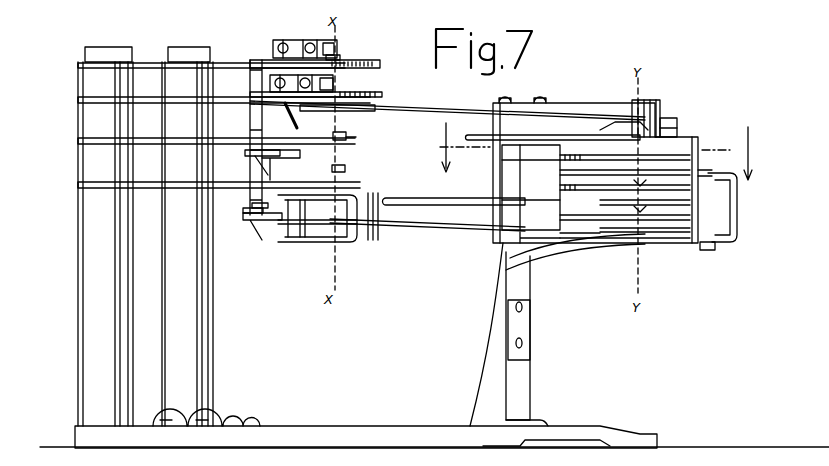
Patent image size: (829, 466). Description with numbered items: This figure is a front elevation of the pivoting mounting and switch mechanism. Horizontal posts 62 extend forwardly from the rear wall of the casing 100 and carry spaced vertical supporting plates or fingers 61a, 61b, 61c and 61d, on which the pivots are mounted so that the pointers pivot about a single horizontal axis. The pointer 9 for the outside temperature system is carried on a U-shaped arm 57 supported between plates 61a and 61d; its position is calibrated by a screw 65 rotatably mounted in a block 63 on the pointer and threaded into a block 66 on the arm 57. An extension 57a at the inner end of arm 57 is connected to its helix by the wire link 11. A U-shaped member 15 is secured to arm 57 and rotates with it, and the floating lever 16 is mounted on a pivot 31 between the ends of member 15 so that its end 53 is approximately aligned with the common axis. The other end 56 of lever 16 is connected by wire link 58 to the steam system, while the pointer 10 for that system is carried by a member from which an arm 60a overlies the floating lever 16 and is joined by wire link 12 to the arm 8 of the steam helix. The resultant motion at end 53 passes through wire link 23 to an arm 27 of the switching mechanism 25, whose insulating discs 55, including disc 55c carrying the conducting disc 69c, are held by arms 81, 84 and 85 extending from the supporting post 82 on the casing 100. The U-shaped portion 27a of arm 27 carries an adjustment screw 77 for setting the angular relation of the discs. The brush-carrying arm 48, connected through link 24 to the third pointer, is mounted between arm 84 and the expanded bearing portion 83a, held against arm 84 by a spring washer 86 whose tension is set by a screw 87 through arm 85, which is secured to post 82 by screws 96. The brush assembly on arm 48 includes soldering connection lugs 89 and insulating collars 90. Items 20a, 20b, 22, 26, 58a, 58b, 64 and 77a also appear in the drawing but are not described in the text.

The arm 8 is at (446, 147).
The pointer 9 is at (362, 62).
The pointer 10 is at (372, 95).
The wire link 11 is at (412, 197).
The wire link 12 is at (248, 156).
The U-shaped member 15 is at (355, 240).
The floating lever 16 is at (300, 226).
The block 20a is at (343, 88).
The block 20b is at (347, 136).
The bar 22 is at (348, 111).
The wire link 23 is at (404, 230).
The link 24 is at (436, 109).
The switching mechanism 25 is at (660, 78).
The strut 26 is at (490, 122).
The arm 27 is at (556, 245).
The U-shaped portion 27a is at (728, 213).
The pivot 31 is at (283, 228).
The arm 48 is at (565, 152).
The end of lever 53 is at (318, 226).
The insulating discs 55 is at (676, 235).
The disc 55c is at (592, 246).
The end of lever 56 is at (246, 216).
The U-shaped arm 57 is at (250, 120).
The extension 57a is at (376, 219).
The wire link 58 is at (258, 212).
The block 58a is at (341, 57).
The block 58b is at (340, 172).
The arm 60a is at (281, 165).
The supporting plate 61a is at (80, 67).
The supporting plate 61b is at (80, 101).
The supporting plate 61c is at (80, 141).
The supporting plate 61d is at (80, 183).
The horizontal posts 62 is at (149, 284).
The block 63 is at (310, 39).
The clamp 64 is at (334, 80).
The screw 65 is at (336, 46).
The block 66 is at (305, 39).
The disc 69c is at (654, 235).
The adjustment screw 77 is at (712, 160).
The plate 77a is at (708, 250).
The arm 81 is at (618, 243).
The supporting post 82 is at (527, 386).
The expanded bearing portion 83a is at (677, 118).
The supporting arm 84 is at (588, 168).
The arm 85 is at (660, 100).
The spring washer 86 is at (679, 124).
The screw 87 is at (622, 118).
The soldering connection lugs 89 is at (500, 213).
The collars 90 is at (531, 187).
The screws 96 is at (540, 101).
The casing 100 is at (62, 432).